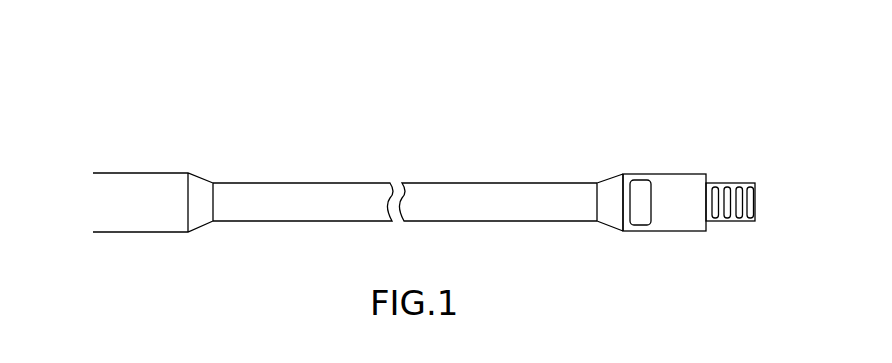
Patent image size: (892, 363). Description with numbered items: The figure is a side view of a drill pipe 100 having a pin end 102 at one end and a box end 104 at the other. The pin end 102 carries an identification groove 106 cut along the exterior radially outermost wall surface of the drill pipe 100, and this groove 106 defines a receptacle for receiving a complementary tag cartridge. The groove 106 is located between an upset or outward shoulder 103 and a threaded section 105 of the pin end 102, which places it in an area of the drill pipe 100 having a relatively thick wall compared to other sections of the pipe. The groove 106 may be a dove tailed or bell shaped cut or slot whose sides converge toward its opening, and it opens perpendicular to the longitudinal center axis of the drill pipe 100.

The drill pipe 100 is at (459, 95).
The pin end 102 is at (687, 174).
The outward shoulder 103 is at (612, 177).
The box end 104 is at (140, 173).
The threaded section 105 is at (727, 183).
The identification groove 106 is at (642, 224).